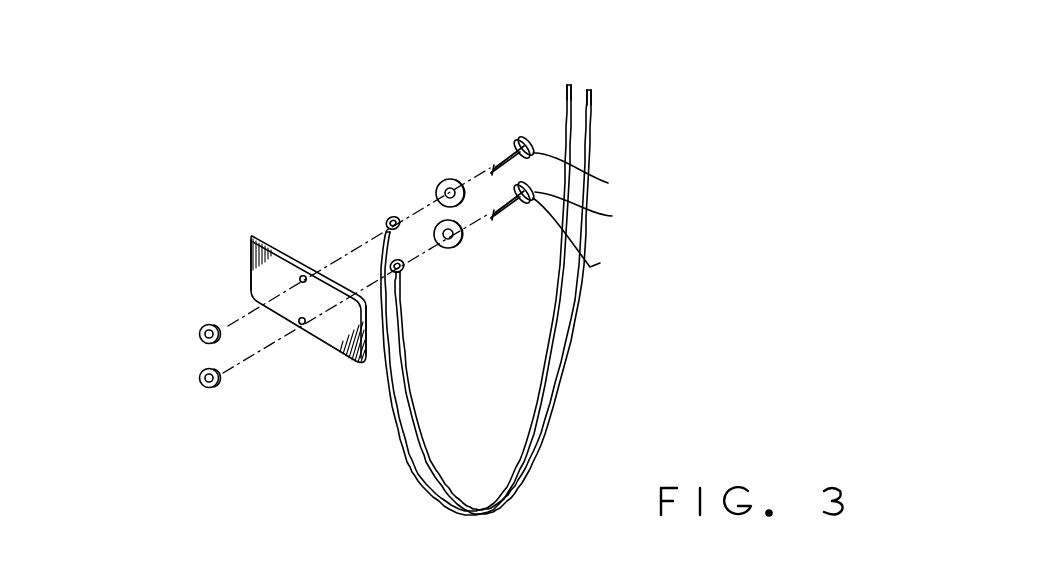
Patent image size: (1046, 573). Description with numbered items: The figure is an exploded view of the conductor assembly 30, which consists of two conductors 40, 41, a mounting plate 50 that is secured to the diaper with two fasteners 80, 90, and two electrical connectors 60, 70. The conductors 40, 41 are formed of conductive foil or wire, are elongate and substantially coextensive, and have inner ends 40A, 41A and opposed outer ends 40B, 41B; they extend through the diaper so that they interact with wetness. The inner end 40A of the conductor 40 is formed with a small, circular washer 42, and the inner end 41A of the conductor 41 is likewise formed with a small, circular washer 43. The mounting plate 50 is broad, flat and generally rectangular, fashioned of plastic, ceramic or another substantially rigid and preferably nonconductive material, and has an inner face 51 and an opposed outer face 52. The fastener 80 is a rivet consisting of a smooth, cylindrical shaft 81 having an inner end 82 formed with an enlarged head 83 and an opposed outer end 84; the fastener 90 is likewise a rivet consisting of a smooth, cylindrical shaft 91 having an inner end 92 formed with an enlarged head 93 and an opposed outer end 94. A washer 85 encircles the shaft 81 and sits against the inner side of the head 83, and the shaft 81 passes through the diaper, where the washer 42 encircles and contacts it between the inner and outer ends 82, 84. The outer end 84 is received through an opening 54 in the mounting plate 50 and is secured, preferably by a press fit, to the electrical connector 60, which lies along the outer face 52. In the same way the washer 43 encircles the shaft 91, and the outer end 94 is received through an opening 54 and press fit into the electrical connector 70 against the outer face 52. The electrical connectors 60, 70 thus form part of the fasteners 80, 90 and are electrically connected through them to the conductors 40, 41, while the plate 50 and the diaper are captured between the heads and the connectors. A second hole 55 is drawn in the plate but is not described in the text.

The conductor assembly 30 is at (355, 110).
The conductor 40 is at (485, 266).
The inner end of conductor 40 40A is at (387, 226).
The outer end of conductor 40 40B is at (570, 84).
The conductor 41 is at (539, 275).
The inner end of conductor 41 41A is at (410, 280).
The outer end of conductor 41 41B is at (590, 90).
The washer 42 is at (393, 214).
The washer 43 is at (402, 262).
The mounting plate 50 is at (323, 352).
The inner face 51 is at (268, 236).
The outer face 52 is at (344, 360).
The opening 54 is at (304, 276).
The second hole 55 is at (300, 327).
The electrical connector 60 is at (210, 323).
The electrical connector 70 is at (220, 384).
The fastener 80 is at (495, 89).
The shaft 81 is at (506, 146).
The inner end of shaft 81 82 is at (581, 172).
The head 83 is at (530, 135).
The outer end of shaft 81 84 is at (490, 162).
The washer 85 is at (438, 182).
The fastener 90 is at (565, 260).
The shaft 91 is at (519, 216).
The inner end of shaft 91 92 is at (566, 226).
The head 93 is at (526, 218).
The outer end of shaft 91 94 is at (493, 217).